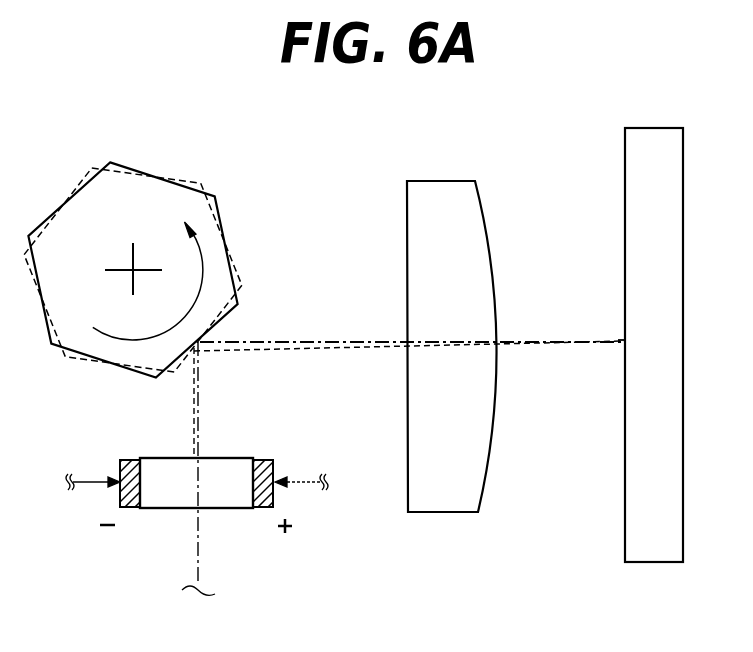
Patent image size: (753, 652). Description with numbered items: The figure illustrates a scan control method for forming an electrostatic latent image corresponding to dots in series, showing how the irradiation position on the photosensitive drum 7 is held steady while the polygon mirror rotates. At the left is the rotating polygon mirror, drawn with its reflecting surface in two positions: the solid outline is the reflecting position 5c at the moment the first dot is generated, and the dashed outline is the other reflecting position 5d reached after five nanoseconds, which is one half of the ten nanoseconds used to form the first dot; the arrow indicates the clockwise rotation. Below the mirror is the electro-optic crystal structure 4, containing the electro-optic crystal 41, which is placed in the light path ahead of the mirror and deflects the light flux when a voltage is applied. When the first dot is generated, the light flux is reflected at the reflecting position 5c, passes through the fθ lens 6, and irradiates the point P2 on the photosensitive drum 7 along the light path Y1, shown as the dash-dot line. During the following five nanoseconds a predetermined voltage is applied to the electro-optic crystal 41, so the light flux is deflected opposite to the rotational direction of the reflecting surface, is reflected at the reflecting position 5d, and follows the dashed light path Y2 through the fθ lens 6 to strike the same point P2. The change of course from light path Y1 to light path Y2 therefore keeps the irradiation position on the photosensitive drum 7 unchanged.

The electro-optic crystal structure 4 is at (197, 524).
The electro-optic crystal 41 is at (170, 492).
The reflecting position 5c is at (230, 323).
The reflecting position 5d is at (242, 288).
The fθ lens 6 is at (412, 242).
The photosensitive drum 7 is at (637, 225).
The point P2 is at (625, 337).
The light path Y1 is at (200, 400).
The light path Y2 is at (193, 380).